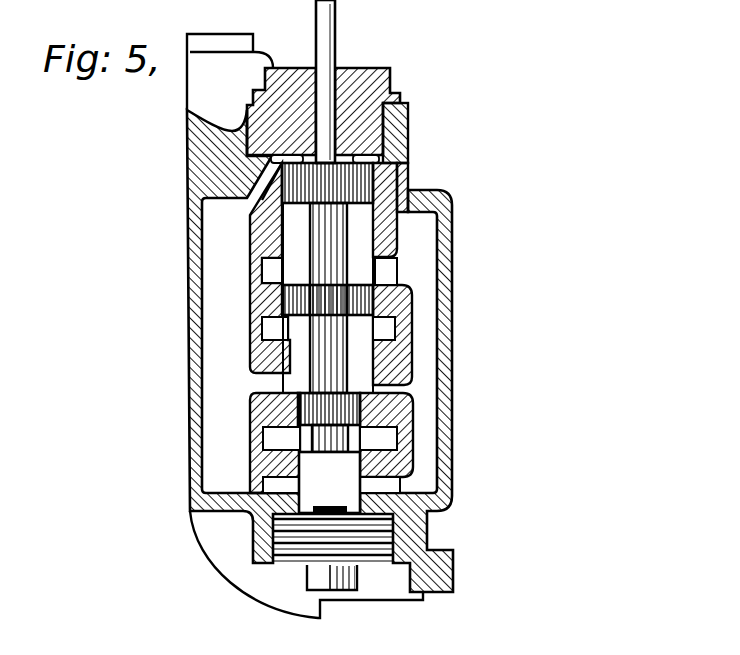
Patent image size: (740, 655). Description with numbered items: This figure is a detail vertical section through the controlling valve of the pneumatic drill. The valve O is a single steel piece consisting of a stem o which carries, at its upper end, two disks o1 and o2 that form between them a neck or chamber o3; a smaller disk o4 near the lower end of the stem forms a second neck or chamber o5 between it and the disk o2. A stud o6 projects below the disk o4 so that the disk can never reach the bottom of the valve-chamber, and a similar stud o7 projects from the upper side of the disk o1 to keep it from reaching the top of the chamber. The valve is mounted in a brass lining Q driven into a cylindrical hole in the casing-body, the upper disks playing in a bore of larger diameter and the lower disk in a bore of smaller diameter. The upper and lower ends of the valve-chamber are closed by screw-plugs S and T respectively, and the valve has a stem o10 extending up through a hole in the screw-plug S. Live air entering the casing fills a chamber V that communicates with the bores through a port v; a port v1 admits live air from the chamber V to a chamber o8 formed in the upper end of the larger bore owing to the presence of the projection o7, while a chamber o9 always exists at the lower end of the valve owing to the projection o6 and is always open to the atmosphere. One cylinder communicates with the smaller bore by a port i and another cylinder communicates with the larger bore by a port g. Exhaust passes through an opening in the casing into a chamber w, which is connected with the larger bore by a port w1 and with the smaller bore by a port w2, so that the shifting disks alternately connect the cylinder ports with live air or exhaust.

The chamber V is at (212, 438).
The screw-plug S is at (383, 75).
The stud o7 is at (413, 123).
The stem o10 is at (333, 55).
The chamber o8 is at (372, 158).
The port w1 is at (383, 273).
The disk o1 is at (402, 211).
The port v1 is at (262, 200).
The chamber w is at (432, 325).
The port w2 is at (373, 490).
The port v is at (282, 385).
The port i is at (262, 447).
The port g is at (268, 332).
The valve O is at (380, 185).
The brass lining Q is at (297, 249).
The neck or chamber o3 is at (265, 272).
The neck or chamber o5 is at (373, 355).
The stem o is at (330, 250).
The disk o2 is at (412, 302).
The disk o4 is at (362, 405).
The stud o6 is at (355, 440).
The chamber o9 is at (313, 493).
The screw-plug T is at (367, 565).